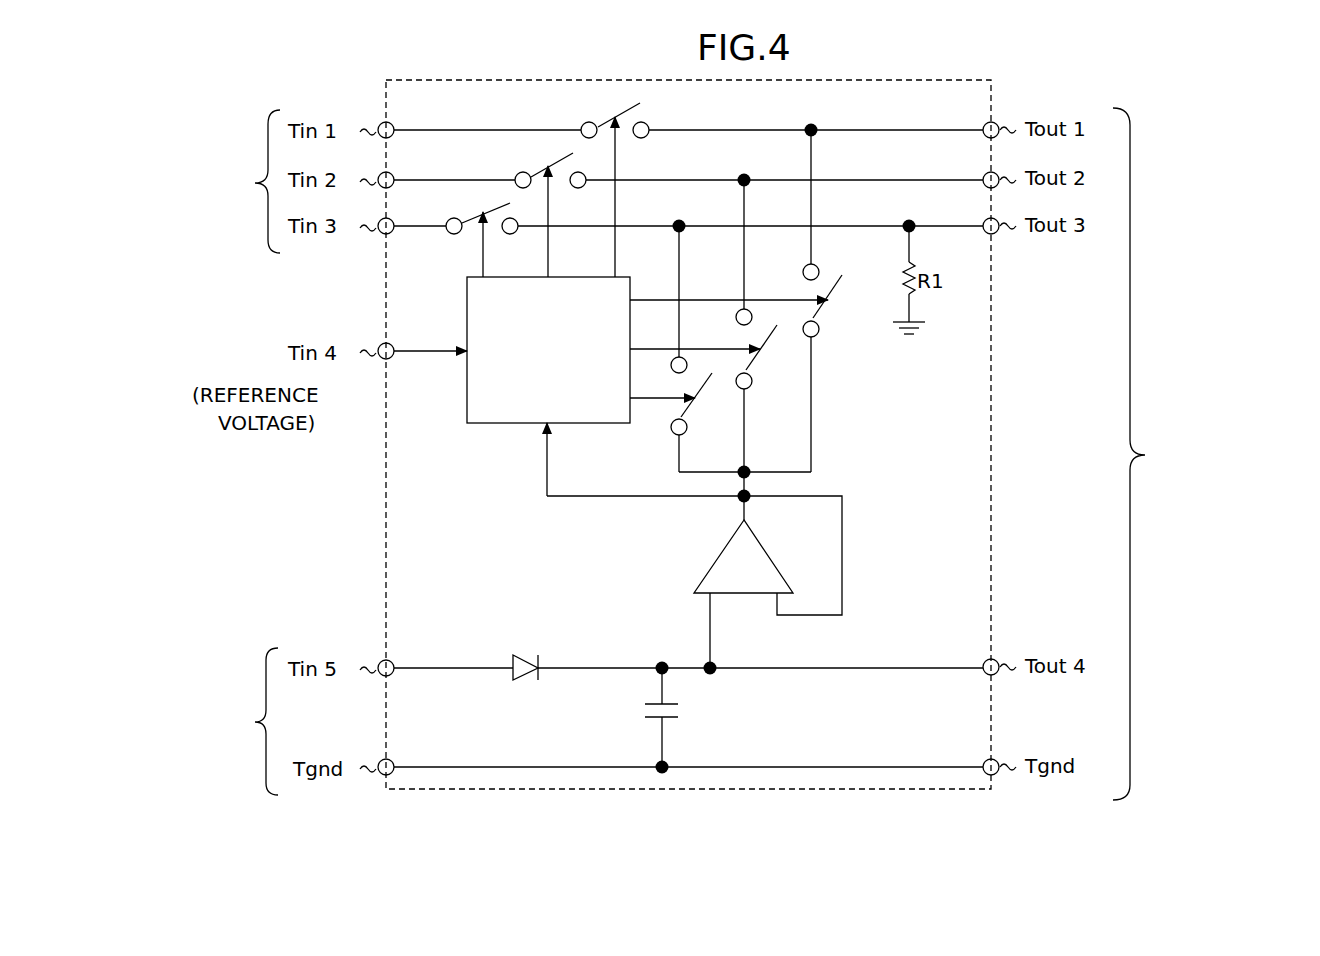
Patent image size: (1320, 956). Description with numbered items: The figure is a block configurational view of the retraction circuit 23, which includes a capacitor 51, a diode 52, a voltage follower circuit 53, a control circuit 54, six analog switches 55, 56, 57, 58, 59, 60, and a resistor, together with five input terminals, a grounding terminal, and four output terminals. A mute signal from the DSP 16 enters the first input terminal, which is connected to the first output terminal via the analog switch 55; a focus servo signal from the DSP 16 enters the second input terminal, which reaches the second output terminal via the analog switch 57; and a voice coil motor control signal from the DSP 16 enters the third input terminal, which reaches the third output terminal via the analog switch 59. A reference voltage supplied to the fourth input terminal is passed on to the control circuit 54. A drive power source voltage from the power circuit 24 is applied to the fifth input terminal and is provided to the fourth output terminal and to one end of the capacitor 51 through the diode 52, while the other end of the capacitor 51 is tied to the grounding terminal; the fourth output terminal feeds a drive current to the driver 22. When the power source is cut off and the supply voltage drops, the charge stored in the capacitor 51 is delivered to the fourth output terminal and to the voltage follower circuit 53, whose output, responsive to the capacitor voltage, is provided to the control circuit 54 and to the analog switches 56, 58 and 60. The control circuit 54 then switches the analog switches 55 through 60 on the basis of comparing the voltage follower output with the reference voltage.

The DSP 16 is at (218, 181).
The driver 22 is at (1191, 454).
The retraction circuit 23 is at (838, 72).
The power circuit 24 is at (218, 721).
The capacitor 51 is at (683, 711).
The diode 52 is at (515, 654).
The voltage follower circuit 53 is at (724, 549).
The control circuit 54 is at (548, 350).
The analog switch 55 is at (618, 106).
The analog switch 56 is at (744, 300).
The analog switch 57 is at (550, 156).
The analog switch 58 is at (711, 349).
The analog switch 59 is at (490, 204).
The analog switch 60 is at (680, 396).